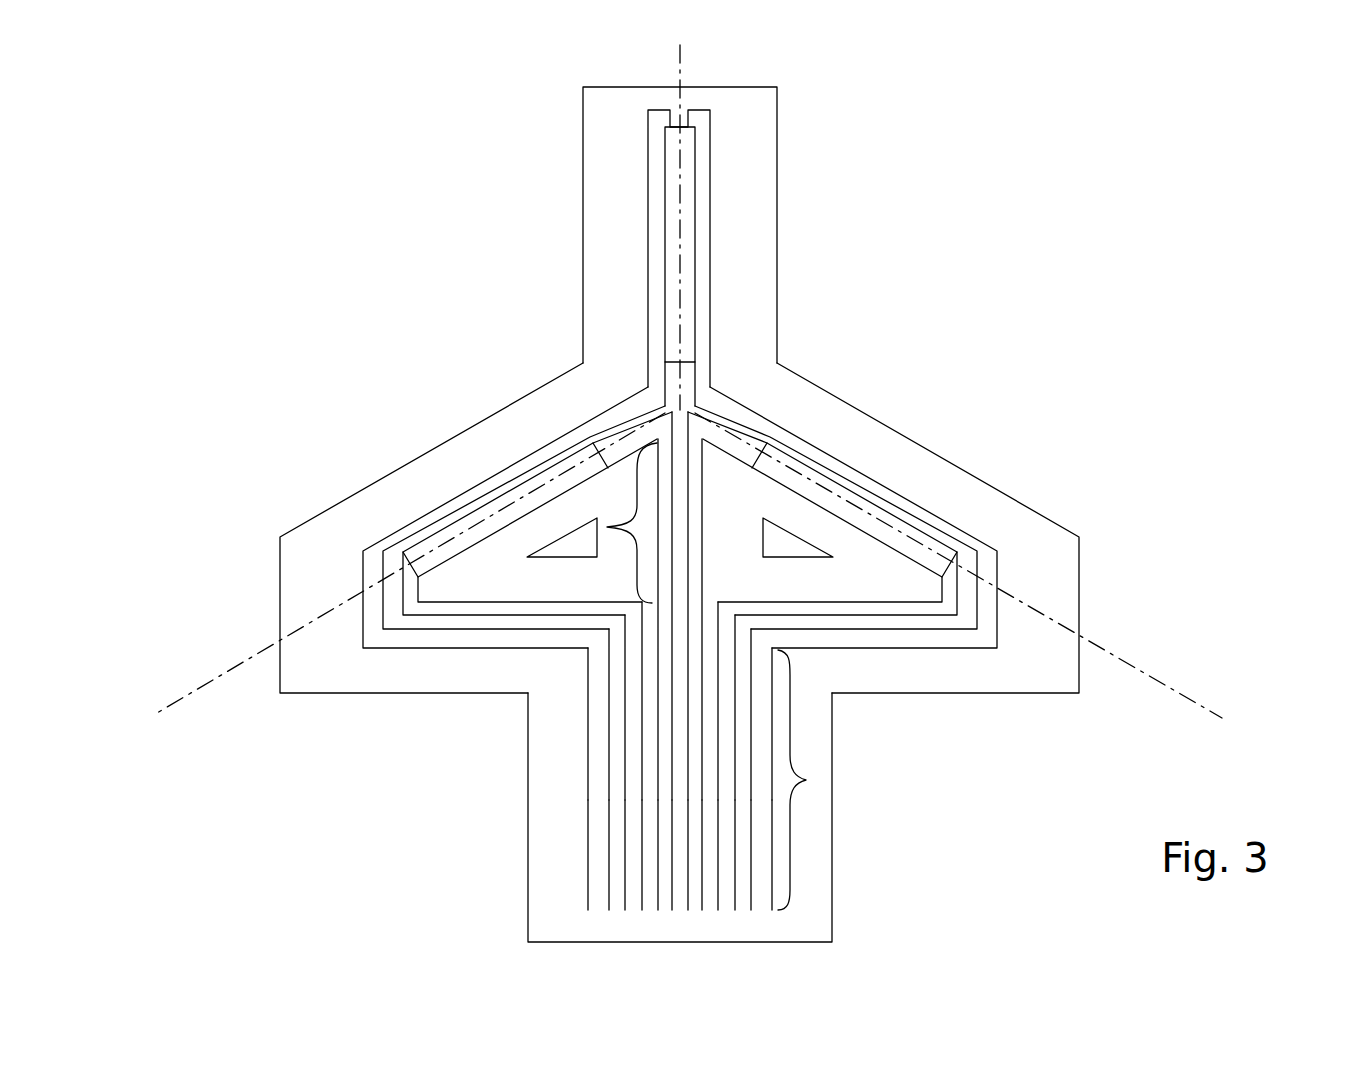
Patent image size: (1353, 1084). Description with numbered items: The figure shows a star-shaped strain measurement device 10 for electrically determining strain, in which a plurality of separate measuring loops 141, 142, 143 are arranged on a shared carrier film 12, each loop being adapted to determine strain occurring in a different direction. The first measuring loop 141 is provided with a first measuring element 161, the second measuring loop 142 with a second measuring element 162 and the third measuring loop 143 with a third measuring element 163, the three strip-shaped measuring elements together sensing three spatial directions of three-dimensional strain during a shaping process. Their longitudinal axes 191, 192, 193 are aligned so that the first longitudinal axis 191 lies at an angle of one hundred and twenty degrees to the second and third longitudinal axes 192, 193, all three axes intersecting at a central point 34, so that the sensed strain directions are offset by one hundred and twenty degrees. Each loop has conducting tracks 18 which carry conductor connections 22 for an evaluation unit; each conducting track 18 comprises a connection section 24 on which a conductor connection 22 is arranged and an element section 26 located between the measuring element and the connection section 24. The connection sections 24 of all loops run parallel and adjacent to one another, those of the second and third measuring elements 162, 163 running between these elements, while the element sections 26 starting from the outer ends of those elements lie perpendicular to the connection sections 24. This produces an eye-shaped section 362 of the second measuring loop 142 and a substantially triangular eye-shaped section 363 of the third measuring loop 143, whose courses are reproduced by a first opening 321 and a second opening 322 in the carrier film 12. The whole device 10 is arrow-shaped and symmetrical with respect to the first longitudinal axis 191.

The strain measurement device 10 is at (1000, 333).
The carrier film 12 is at (1068, 585).
The conducting tracks 18 is at (582, 835).
The conductor connections 22 is at (790, 925).
The connection sections 24 is at (806, 780).
The element sections 26 is at (835, 448).
The central point 34 is at (672, 408).
The first measuring loop 141 is at (710, 165).
The second measuring loop 142 is at (970, 603).
The third measuring loop 143 is at (395, 556).
The first measuring element 161 is at (688, 205).
The second measuring element 162 is at (930, 543).
The third measuring element 163 is at (470, 527).
The first longitudinal axis 191 is at (677, 47).
The second longitudinal axis 192 is at (1178, 690).
The third longitudinal axis 193 is at (190, 697).
The first opening 321 is at (777, 540).
The second opening 322 is at (575, 540).
The eye-shaped section 362 is at (863, 668).
The eye-shaped section 363 is at (312, 553).